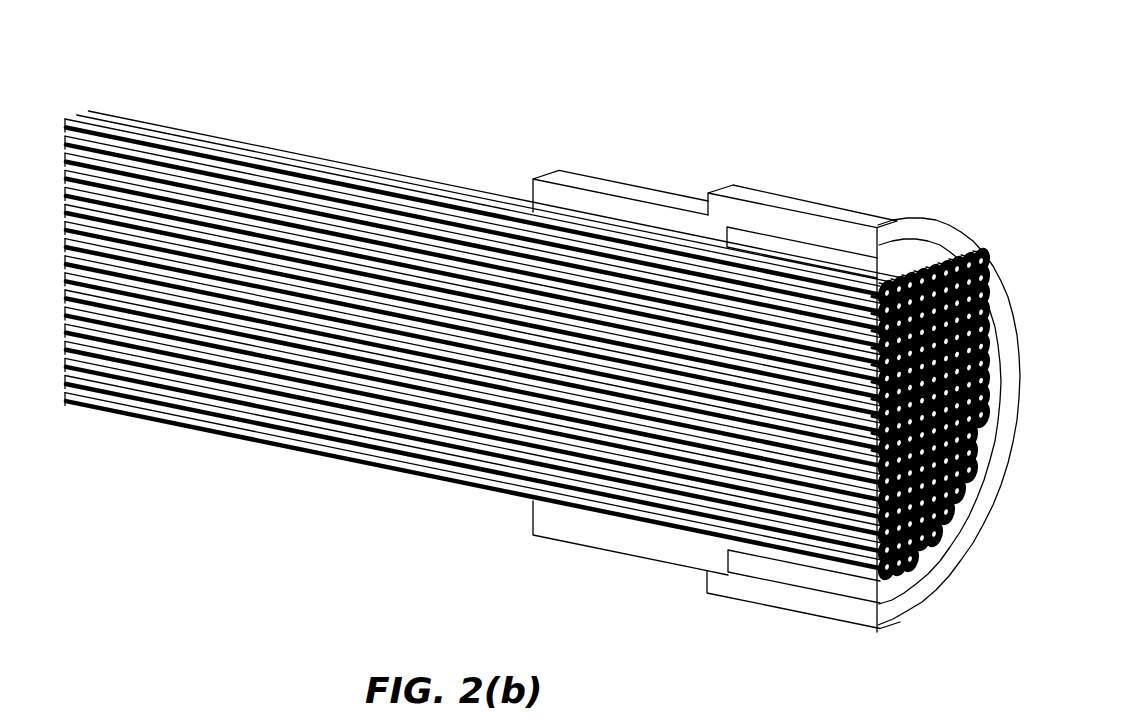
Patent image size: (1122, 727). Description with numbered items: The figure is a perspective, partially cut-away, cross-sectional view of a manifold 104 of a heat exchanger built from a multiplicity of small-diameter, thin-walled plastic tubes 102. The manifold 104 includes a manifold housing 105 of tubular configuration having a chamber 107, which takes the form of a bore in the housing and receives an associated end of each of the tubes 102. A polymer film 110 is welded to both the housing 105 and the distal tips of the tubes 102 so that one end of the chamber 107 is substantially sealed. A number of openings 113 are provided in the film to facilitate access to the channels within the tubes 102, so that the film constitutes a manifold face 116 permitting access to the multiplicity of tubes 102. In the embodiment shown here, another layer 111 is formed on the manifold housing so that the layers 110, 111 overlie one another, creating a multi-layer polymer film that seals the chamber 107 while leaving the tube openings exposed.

The plastic tubes 102 is at (160, 424).
The manifold 104 is at (716, 351).
The manifold housing 105 is at (800, 200).
The chamber 107 is at (757, 564).
The polymer film 110 is at (990, 496).
The additional layer 111 is at (1010, 405).
The openings 113 is at (955, 520).
The manifold face 116 is at (993, 421).